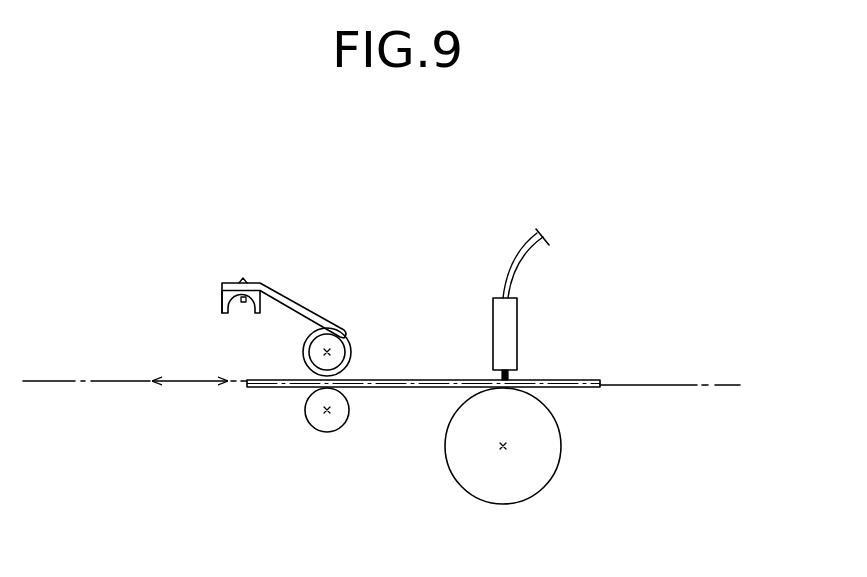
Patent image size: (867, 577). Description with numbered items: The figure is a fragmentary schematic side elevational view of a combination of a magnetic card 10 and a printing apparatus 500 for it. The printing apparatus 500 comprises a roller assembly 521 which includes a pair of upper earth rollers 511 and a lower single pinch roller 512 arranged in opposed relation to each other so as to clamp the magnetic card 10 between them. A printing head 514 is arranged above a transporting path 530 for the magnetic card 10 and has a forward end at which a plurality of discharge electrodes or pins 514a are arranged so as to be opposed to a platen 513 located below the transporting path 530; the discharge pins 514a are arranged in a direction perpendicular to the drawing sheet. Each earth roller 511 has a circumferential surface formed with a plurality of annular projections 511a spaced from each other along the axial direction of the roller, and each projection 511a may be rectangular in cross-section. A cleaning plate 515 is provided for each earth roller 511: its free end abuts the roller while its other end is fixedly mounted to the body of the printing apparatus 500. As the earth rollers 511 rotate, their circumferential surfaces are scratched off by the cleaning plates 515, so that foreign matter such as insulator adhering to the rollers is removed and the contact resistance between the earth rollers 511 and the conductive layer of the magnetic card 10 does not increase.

The printing apparatus 500 is at (180, 294).
The magnetic card 10 is at (583, 388).
The earth rollers 511 is at (297, 349).
The annular projections 511a is at (353, 344).
The pinch roller 512 is at (305, 412).
The platen 513 is at (456, 457).
The printing head 514 is at (496, 335).
The discharge pins 514a is at (512, 378).
The cleaning plates 515 is at (284, 290).
The roller assembly 521 is at (356, 348).
The transporting path 530 is at (48, 381).